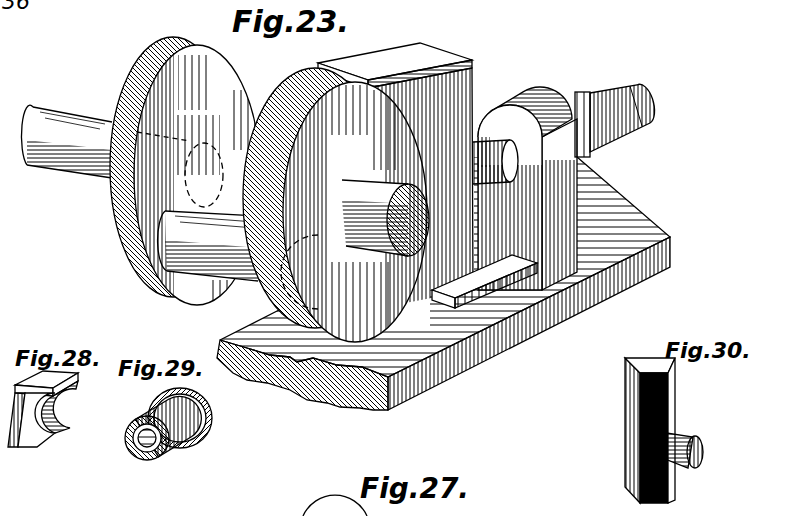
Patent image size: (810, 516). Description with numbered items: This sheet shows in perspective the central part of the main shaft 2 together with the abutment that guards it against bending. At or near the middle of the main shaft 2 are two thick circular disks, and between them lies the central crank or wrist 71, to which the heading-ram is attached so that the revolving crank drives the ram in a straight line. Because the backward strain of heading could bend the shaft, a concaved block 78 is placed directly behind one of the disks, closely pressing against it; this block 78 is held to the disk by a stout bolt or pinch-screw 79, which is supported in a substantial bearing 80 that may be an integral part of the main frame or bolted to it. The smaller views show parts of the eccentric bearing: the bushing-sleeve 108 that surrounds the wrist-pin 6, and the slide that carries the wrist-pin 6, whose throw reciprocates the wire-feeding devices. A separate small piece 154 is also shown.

In FIG. 23, the crank or wrist 71 is at (208, 246).
In FIG. 23, the main shaft 2 is at (385, 218).
In FIG. 23, the concaved block 78 is at (395, 176).
In FIG. 23, the bearing 80 is at (527, 188).
In FIG. 23, the bolt or pinch-screw 79 is at (631, 119).
In FIG. 28, the clip block 154 is at (23, 445).
In FIG. 29, the bushing-sleeve 108 is at (168, 445).
In FIG. 27, the bushing-sleeve 108 is at (316, 512).
In FIG. 30, the wrist-pin 6 is at (703, 463).